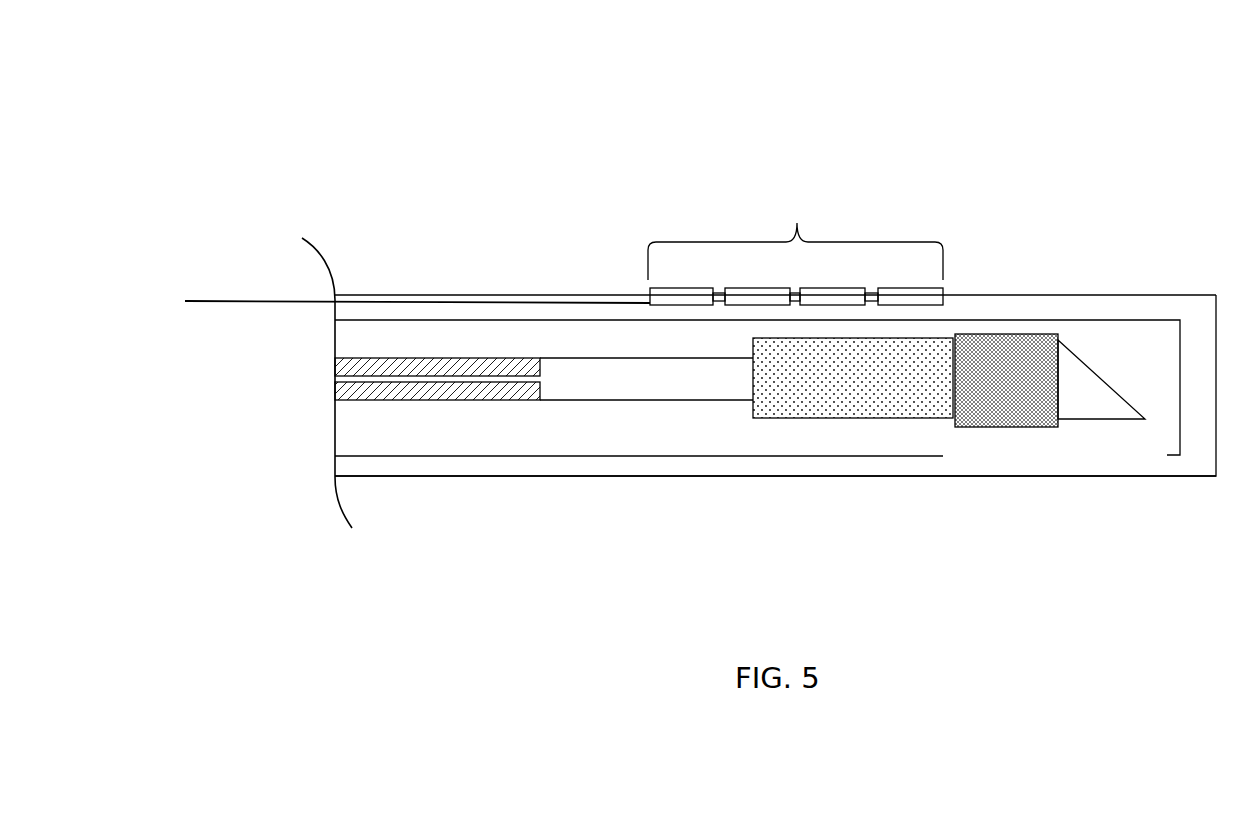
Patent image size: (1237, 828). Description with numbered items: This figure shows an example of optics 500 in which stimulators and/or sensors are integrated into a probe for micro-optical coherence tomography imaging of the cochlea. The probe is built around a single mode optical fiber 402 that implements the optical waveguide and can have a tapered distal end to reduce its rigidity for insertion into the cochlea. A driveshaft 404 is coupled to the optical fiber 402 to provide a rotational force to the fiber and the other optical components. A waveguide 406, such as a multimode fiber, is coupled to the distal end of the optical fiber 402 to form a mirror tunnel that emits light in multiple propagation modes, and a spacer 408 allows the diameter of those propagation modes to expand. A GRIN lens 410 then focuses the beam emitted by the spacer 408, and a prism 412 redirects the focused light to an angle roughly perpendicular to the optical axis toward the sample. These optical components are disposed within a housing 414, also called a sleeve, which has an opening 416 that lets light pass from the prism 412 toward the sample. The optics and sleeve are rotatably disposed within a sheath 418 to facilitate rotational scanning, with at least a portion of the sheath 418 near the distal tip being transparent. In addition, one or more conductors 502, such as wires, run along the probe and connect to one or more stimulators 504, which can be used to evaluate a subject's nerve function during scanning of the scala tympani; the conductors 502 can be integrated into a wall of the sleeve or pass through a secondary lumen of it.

The optics 500 is at (803, 81).
The conductor 502 is at (266, 288).
The stimulators 504 is at (795, 245).
The single mode optical fiber 402 is at (307, 380).
The driveshaft 404 is at (429, 407).
The waveguide 406 is at (662, 413).
The spacer 408 is at (788, 433).
The GRIN lens 410 is at (991, 439).
The prism 412 is at (1106, 364).
The housing 414 is at (523, 468).
The opening 416 is at (1102, 470).
The sheath 418 is at (717, 490).